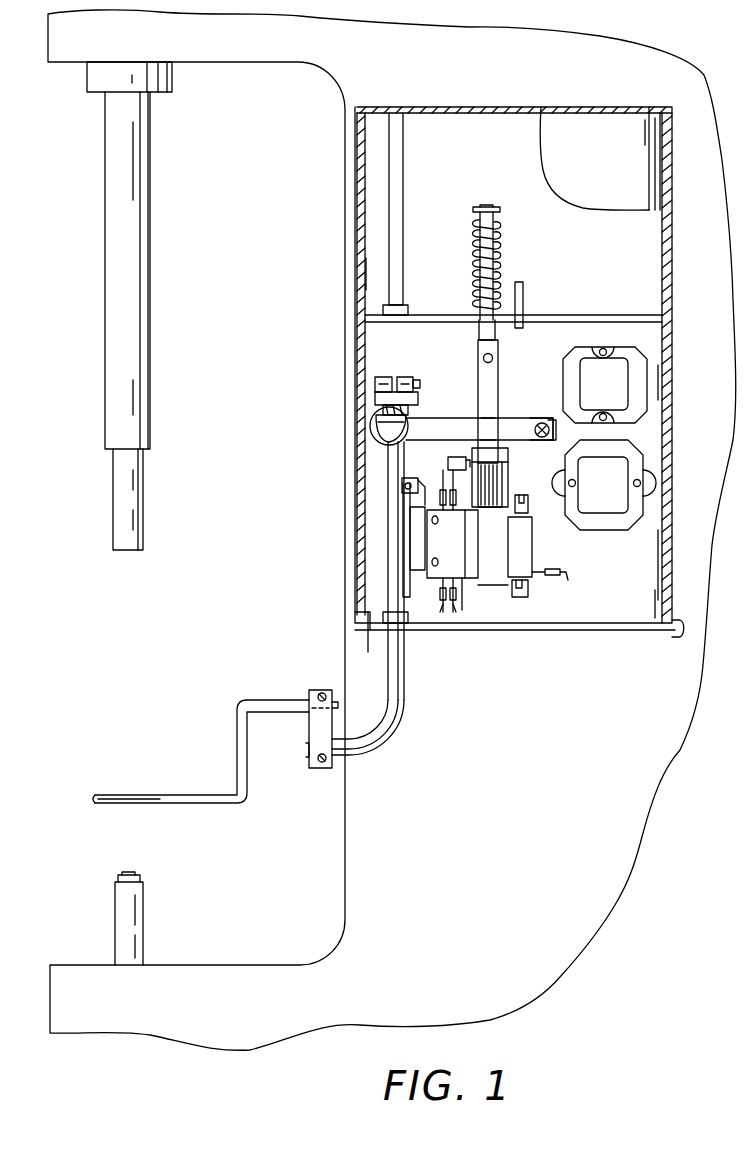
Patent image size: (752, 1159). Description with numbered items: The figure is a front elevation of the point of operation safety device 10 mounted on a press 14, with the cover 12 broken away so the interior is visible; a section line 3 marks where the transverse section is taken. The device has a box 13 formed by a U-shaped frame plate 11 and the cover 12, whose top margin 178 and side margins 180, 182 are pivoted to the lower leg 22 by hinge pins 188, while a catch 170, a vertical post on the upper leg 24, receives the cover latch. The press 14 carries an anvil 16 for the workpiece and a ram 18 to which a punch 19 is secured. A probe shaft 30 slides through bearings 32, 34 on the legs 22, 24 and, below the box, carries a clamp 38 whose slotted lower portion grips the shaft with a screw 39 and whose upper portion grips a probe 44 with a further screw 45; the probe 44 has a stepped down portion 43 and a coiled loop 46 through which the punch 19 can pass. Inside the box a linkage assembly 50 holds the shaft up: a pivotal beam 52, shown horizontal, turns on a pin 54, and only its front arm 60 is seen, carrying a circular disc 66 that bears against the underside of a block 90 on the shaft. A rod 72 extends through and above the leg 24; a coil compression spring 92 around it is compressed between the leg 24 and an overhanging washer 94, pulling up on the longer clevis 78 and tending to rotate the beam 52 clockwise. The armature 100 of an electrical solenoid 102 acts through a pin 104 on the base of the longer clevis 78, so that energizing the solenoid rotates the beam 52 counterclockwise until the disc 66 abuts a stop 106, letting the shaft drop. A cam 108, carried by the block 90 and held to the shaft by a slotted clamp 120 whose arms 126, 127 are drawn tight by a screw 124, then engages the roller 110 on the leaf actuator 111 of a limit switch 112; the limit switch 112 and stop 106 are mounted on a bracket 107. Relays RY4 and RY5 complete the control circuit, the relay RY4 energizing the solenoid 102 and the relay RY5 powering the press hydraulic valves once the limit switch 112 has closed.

The section line 3 is at (362, 270).
The point of operation safety device 10 is at (509, 92).
The frame plate 11 is at (594, 313).
The cover 12 is at (628, 118).
The box 13 is at (560, 636).
The press 14 is at (328, 80).
The anvil 16 is at (125, 910).
The ram 18 is at (118, 362).
The punch 19 is at (122, 485).
The leg 22 is at (468, 635).
The leg 24 is at (452, 313).
The probe shaft 30 is at (392, 457).
The bearing 32 is at (400, 625).
The bearing 34 is at (413, 296).
The clamp 38 is at (320, 725).
The screw 39 is at (325, 768).
The stepped down portion 43 is at (245, 787).
The probe 44 is at (237, 728).
The screw 45 is at (318, 693).
The coiled loop 46 is at (135, 803).
The linkage assembly 50 is at (420, 440).
The pivotal beam 52 is at (470, 428).
The pin 54 is at (546, 423).
The front arm 60 is at (550, 437).
The circular disc 66 is at (380, 432).
The rod 72 is at (497, 330).
The longer clevis 78 is at (498, 385).
The block 90 is at (412, 401).
The coil compression spring 92 is at (497, 251).
The overhanging washer 94 is at (500, 208).
The armature 100 is at (498, 485).
The electrical solenoid 102 is at (525, 553).
The pin 104 is at (458, 455).
The stop 106 is at (410, 557).
The bracket 107 is at (417, 560).
The cam 108 is at (372, 428).
The roller 110 is at (405, 485).
The leaf actuator 111 is at (420, 505).
The limit switch 112 is at (460, 555).
The clamp 120 is at (375, 388).
The screw 124 is at (419, 385).
The arm 126 is at (380, 377).
The arm 127 is at (408, 376).
The catch 170 is at (525, 292).
The top margin 178 is at (417, 107).
The side margin 180 is at (357, 190).
The side margin 182 is at (672, 260).
The hinge pins 188 is at (358, 625).
The relay RY4 is at (618, 378).
The relay RY5 is at (620, 470).